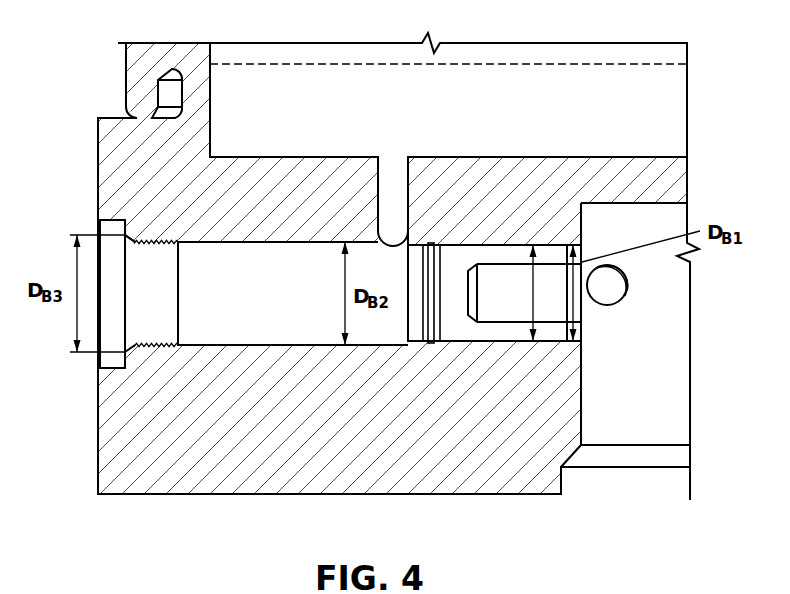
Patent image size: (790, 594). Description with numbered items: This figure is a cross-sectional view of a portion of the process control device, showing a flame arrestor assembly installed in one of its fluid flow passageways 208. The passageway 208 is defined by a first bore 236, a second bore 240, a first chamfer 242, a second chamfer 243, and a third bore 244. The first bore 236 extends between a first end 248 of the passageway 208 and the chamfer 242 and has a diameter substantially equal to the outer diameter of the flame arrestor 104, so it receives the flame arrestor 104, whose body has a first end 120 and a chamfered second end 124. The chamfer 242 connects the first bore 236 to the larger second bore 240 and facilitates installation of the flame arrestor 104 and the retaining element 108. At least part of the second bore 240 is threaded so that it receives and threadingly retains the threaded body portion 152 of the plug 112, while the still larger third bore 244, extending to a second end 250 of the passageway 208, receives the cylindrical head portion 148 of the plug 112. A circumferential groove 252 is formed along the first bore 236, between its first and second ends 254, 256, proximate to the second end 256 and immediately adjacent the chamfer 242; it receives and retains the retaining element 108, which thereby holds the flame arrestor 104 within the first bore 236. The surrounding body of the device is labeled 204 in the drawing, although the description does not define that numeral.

The flame arrestor 104 is at (449, 331).
The retaining element 108 is at (439, 271).
The plug 112 is at (138, 363).
The first end 120 is at (607, 199).
The chamfered second end 124 is at (441, 300).
The head portion 148 is at (115, 233).
The threaded body portion 152 is at (163, 265).
The housing 204 is at (158, 462).
The fluid flow passageway 208 is at (322, 362).
The first bore 236 is at (518, 245).
The second bore 240 is at (302, 242).
The first chamfer 242 is at (422, 243).
The second chamfer 243 is at (131, 238).
The third bore 244 is at (129, 229).
The first end 248 is at (566, 284).
The second end 250 is at (98, 344).
The circumferential groove 252 is at (432, 245).
The first end 254 is at (574, 293).
The second end 256 is at (423, 297).